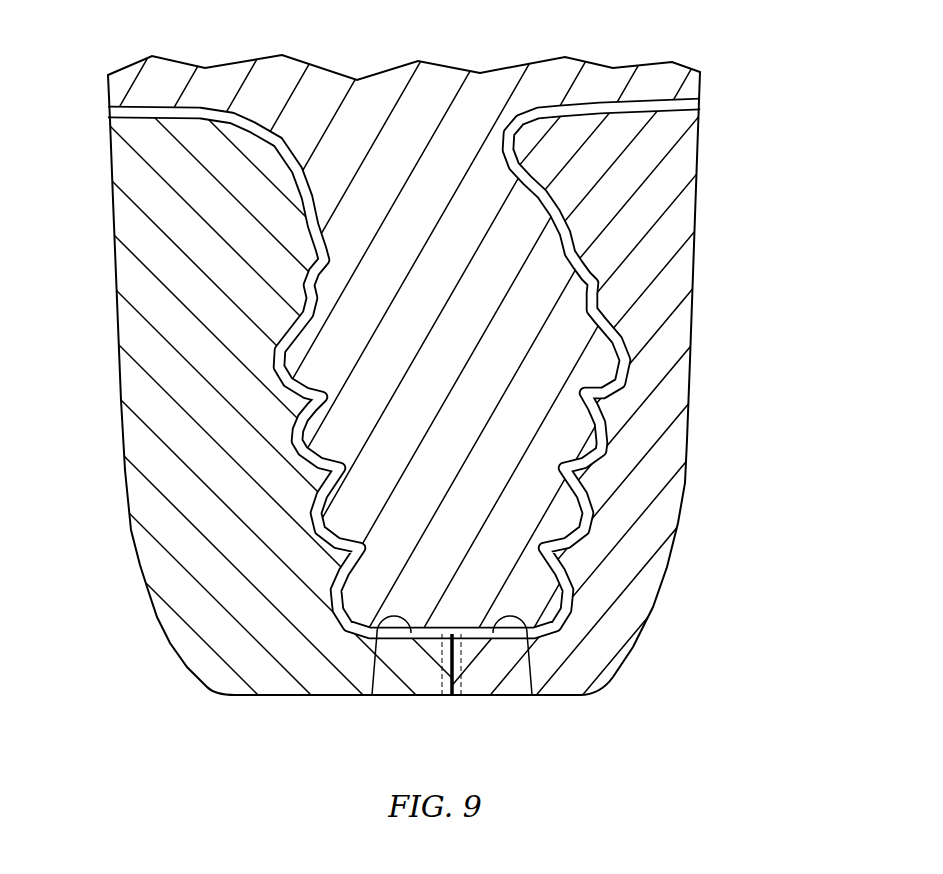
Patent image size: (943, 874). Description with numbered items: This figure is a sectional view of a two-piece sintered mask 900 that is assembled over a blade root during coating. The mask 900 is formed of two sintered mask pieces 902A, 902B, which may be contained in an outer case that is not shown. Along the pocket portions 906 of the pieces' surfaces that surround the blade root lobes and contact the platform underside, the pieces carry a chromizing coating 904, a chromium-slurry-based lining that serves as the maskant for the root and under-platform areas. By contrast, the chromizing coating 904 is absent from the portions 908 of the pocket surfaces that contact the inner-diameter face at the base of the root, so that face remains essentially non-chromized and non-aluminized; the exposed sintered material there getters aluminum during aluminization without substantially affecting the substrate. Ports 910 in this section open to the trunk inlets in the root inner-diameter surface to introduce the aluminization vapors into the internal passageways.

The mask 900 is at (471, 437).
The sintered mask piece 902A is at (160, 560).
The sintered mask piece 902B is at (653, 518).
The chromizing coating 904 is at (573, 230).
The pocket portions 906 is at (320, 443).
The portions of pocket surfaces 908 is at (372, 695).
The ports 910 is at (458, 667).